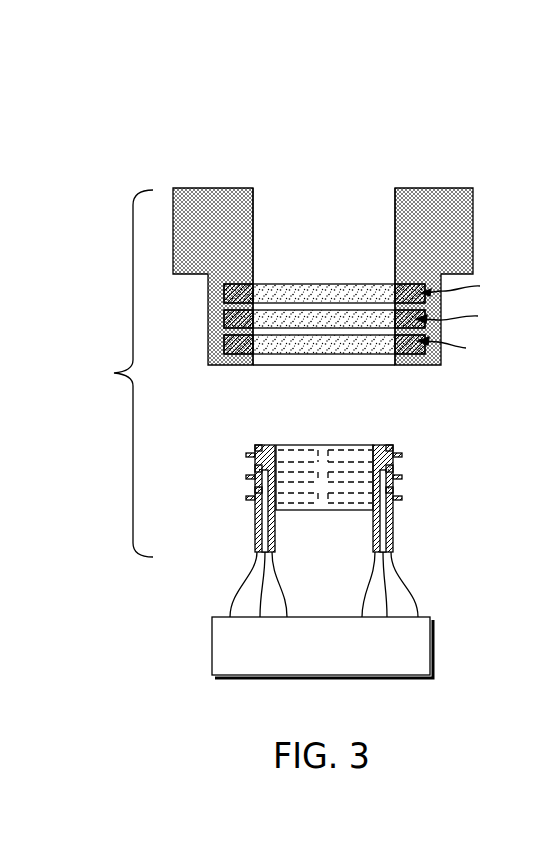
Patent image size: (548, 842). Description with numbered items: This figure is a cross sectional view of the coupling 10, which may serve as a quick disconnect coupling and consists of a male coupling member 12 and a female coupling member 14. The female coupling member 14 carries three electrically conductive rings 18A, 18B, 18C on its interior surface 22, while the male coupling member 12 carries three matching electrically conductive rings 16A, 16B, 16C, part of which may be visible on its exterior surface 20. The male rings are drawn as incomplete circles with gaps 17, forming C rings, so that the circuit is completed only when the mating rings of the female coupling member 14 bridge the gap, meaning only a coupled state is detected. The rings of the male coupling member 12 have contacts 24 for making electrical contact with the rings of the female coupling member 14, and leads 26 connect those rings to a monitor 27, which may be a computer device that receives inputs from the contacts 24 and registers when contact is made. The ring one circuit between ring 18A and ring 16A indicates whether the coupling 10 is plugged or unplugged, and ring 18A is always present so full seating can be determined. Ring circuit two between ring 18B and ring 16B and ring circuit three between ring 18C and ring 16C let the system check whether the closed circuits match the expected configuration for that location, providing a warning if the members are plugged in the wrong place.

The coupling 10 is at (313, 373).
The male coupling member 12 is at (332, 511).
The female coupling member 14 is at (320, 140).
The electrically conductive ring 16A is at (399, 498).
The electrically conductive ring 16B is at (403, 477).
The electrically conductive ring 16C is at (401, 455).
The gap 17 is at (325, 458).
The electrically conductive ring 18A is at (343, 345).
The electrically conductive ring 18B is at (355, 318).
The electrically conductive ring 18C is at (322, 292).
The exterior surface 20 is at (339, 506).
The interior surface 22 is at (253, 215).
The contacts 24 is at (246, 455).
The leads 26 is at (258, 510).
The monitor 27 is at (212, 645).